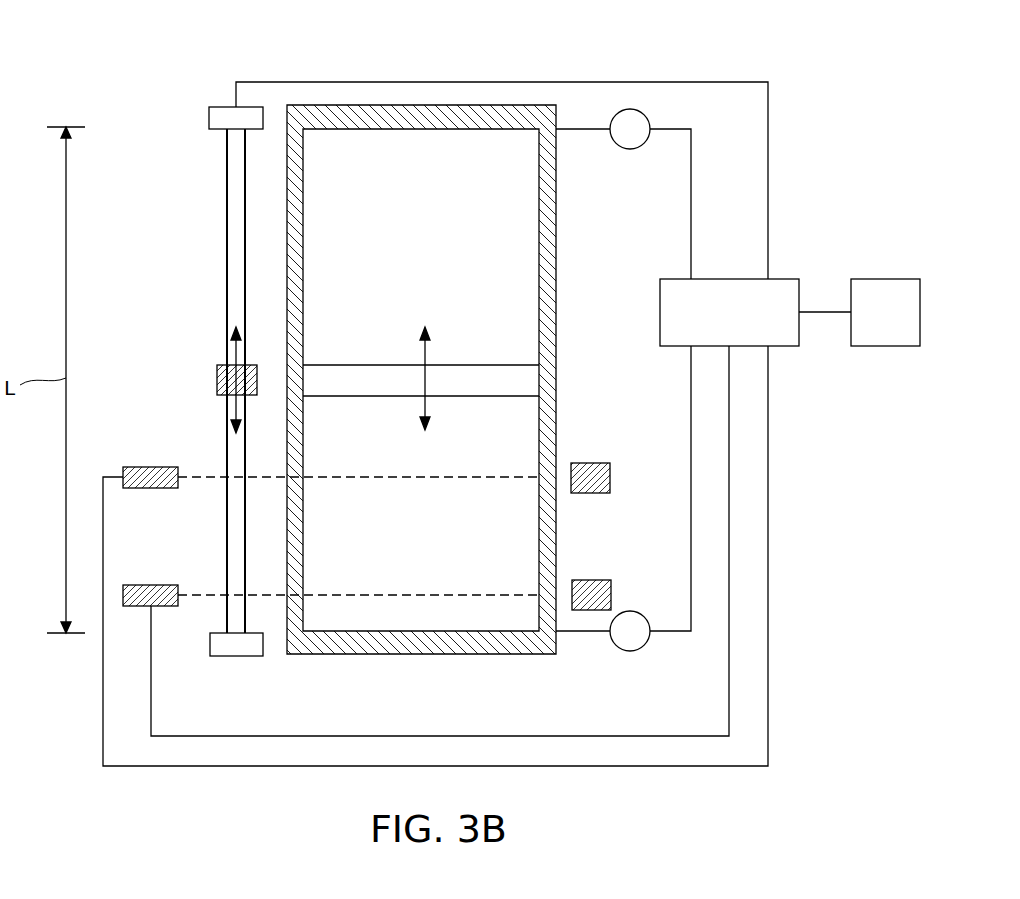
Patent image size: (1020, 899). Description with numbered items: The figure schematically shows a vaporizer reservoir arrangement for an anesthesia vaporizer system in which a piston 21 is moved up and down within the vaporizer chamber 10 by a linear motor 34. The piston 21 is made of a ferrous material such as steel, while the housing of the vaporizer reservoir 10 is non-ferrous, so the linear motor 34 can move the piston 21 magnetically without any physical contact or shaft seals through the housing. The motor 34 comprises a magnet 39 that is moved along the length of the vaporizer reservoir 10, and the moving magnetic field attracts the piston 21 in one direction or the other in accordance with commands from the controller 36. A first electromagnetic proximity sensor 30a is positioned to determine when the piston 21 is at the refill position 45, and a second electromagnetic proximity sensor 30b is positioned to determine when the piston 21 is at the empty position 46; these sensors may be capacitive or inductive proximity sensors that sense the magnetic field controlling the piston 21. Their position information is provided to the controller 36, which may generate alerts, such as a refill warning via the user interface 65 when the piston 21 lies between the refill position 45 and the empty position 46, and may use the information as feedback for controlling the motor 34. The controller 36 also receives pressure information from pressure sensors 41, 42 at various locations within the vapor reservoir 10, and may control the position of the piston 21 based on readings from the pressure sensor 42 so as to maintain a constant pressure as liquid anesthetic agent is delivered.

The vaporizer chamber 10 is at (556, 243).
The piston 21 is at (520, 380).
The linear motor 34 is at (160, 348).
The magnet 39 is at (217, 377).
The first electromagnetic proximity sensor 30a is at (148, 466).
The second electromagnetic proximity sensor 30b is at (148, 584).
The refill position 45 is at (505, 475).
The empty position 46 is at (497, 593).
The pressure sensor 41 is at (628, 150).
The pressure sensor 42 is at (628, 652).
The controller 36 is at (730, 279).
The user interface 65 is at (886, 279).